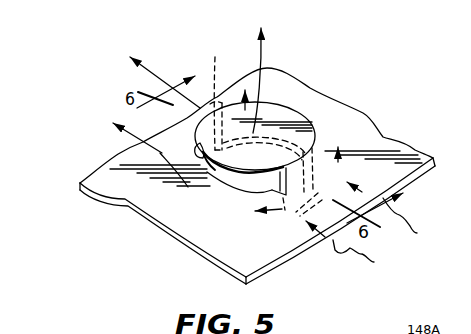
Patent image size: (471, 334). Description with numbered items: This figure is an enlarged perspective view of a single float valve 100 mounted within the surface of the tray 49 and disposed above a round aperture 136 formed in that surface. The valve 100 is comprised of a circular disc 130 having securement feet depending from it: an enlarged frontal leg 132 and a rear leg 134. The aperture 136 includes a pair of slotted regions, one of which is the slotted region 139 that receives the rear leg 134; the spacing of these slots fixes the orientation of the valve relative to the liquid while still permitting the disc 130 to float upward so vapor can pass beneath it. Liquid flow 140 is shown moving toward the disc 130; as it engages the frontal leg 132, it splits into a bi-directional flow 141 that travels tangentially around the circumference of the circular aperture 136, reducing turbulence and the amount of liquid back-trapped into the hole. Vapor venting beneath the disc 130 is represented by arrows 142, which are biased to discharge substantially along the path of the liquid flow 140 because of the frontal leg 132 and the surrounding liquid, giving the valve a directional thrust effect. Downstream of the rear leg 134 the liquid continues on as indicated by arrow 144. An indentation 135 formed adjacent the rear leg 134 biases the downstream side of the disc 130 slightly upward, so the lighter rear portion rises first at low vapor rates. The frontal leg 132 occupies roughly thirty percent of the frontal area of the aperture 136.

The float valve 100 is at (363, 101).
The circular disc 130 is at (291, 113).
The frontal leg 132 is at (335, 170).
The rear leg 134 is at (222, 94).
The indentation 135 is at (247, 90).
The aperture 136 is at (245, 193).
The slotted region 139 is at (190, 186).
The liquid flow 140 is at (333, 240).
The bi-directional flow 141 is at (340, 168).
The vapor discharge arrows 142 is at (263, 50).
The downstream liquid flow arrow 144 is at (168, 75).
The tray 49 is at (418, 150).